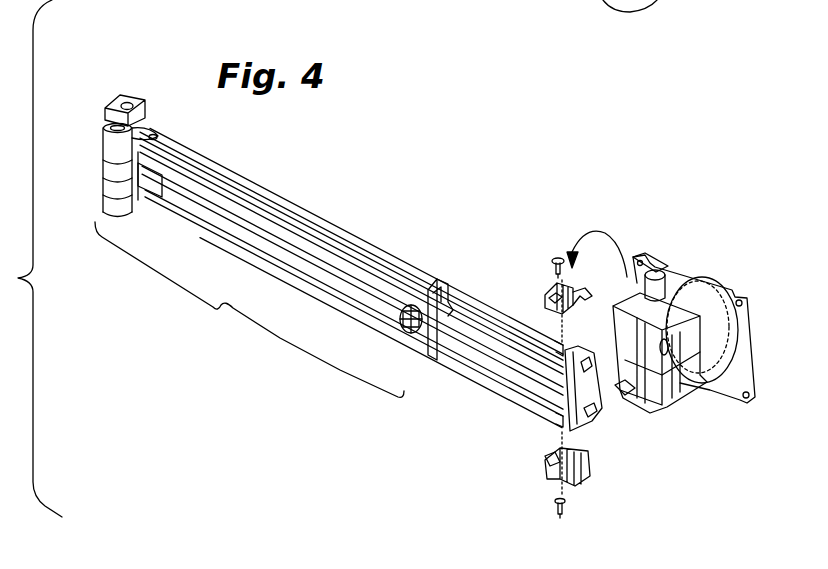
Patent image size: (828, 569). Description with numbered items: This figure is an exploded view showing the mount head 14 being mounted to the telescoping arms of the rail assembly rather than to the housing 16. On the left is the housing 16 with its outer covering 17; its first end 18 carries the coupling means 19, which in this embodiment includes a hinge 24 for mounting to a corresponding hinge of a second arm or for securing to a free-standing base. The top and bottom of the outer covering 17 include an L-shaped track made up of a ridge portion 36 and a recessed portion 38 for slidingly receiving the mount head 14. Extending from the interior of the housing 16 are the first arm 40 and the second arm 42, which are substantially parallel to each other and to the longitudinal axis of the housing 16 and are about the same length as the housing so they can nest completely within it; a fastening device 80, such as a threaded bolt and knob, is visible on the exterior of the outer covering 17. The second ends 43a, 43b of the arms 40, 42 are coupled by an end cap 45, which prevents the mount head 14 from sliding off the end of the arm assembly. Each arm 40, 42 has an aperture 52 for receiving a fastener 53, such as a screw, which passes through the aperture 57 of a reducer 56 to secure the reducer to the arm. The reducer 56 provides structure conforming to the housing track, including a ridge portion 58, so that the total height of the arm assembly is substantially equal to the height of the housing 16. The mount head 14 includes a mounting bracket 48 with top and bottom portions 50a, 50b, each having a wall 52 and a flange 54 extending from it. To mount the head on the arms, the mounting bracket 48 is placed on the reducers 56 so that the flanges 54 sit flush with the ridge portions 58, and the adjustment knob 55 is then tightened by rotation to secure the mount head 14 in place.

The mount head 14 is at (692, 336).
The housing 16 is at (366, 285).
The outer covering 17 is at (165, 156).
The first end 18 is at (91, 170).
The coupling means 19 is at (110, 100).
The hinge 24 is at (118, 210).
The ridge portion 36 is at (225, 195).
The recessed portion 38 is at (208, 210).
The first arm 40 is at (460, 300).
The second arm 42 is at (478, 360).
The second end of first arm 43a is at (556, 345).
The second end of second arm 43b is at (557, 415).
The end cap 45 is at (593, 418).
The mounting bracket 48 is at (680, 357).
The top portion 50a is at (697, 283).
The bottom portion 50b is at (675, 395).
The aperture 52 is at (678, 312).
The fastener 53 is at (553, 255).
The flange 54 is at (628, 388).
The adjustment knob 55 is at (665, 262).
The reducer 56 is at (558, 368).
The aperture 57 is at (569, 290).
The ridge portion 58 is at (522, 284).
The fastening device 80 is at (400, 316).